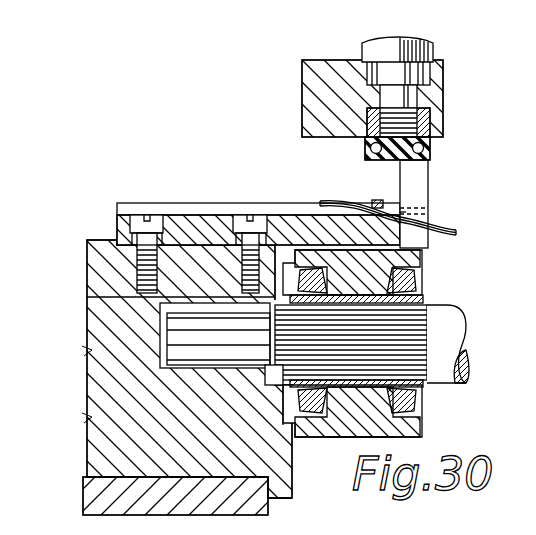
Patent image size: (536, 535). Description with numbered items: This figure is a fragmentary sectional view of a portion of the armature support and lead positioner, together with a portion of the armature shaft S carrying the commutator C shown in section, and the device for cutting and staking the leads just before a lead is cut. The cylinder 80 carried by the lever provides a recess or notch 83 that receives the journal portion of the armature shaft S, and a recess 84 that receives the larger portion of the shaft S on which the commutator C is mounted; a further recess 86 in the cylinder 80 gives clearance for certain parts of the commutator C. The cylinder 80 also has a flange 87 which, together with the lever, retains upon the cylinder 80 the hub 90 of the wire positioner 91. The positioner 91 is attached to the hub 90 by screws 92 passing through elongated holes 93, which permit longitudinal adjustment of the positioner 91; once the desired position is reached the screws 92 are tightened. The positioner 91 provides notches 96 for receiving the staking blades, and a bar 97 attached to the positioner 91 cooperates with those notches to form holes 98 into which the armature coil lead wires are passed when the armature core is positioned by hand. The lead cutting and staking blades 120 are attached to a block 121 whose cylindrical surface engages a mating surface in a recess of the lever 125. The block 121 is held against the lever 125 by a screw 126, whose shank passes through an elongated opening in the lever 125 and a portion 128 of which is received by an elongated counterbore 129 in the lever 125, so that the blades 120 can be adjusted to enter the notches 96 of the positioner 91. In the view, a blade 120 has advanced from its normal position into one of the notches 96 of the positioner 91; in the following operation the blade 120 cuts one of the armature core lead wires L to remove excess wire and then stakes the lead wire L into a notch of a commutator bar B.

The cylinder 80 is at (86, 410).
The recess or notch 83 is at (160, 310).
The armature shaft S is at (188, 350).
The recess 84 is at (270, 376).
The recess 86 is at (290, 425).
The flange 87 is at (290, 503).
The hub 90 is at (228, 508).
The wire positioner 91 is at (298, 222).
The screws 92 is at (157, 222).
The elongated holes 93 is at (128, 236).
The notches 96 is at (420, 240).
The bar 97 is at (373, 200).
The holes 98 is at (405, 212).
The lead cutting and staking blades 120 is at (430, 202).
The block 121 is at (434, 119).
The lever 125 is at (312, 93).
The screw 126 is at (430, 47).
The portion of screw 128 is at (432, 70).
The elongated counterbore 129 is at (428, 82).
The armature core lead wire L is at (392, 218).
The commutator bar B is at (425, 262).
The commutator C is at (338, 431).